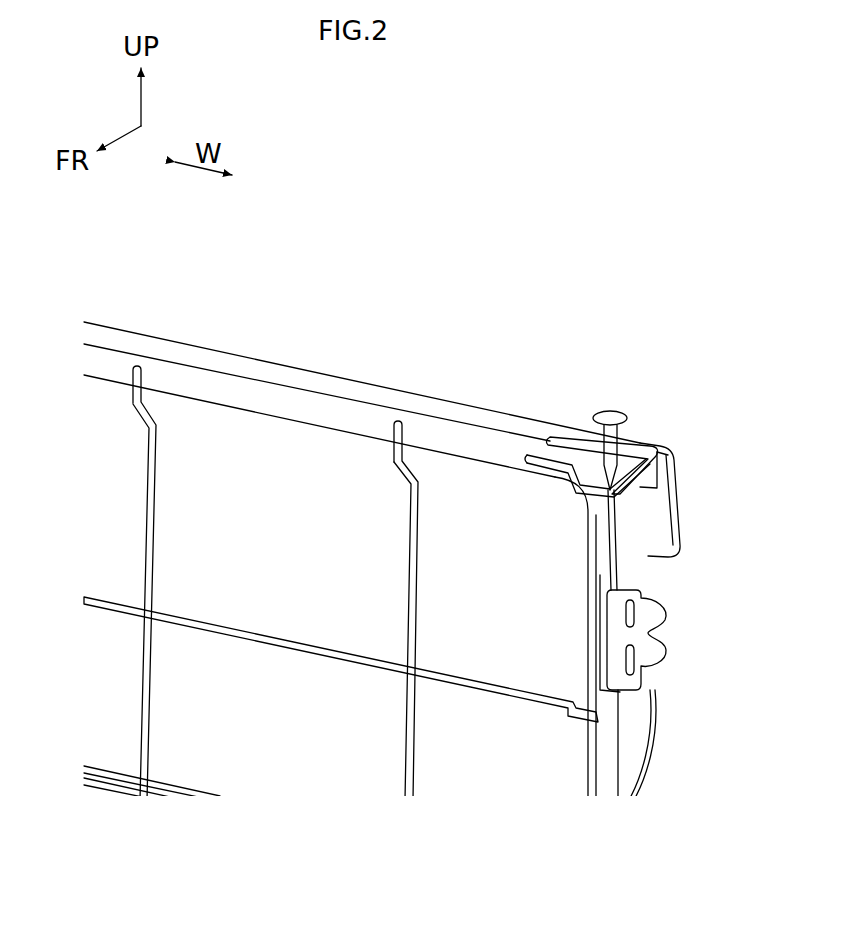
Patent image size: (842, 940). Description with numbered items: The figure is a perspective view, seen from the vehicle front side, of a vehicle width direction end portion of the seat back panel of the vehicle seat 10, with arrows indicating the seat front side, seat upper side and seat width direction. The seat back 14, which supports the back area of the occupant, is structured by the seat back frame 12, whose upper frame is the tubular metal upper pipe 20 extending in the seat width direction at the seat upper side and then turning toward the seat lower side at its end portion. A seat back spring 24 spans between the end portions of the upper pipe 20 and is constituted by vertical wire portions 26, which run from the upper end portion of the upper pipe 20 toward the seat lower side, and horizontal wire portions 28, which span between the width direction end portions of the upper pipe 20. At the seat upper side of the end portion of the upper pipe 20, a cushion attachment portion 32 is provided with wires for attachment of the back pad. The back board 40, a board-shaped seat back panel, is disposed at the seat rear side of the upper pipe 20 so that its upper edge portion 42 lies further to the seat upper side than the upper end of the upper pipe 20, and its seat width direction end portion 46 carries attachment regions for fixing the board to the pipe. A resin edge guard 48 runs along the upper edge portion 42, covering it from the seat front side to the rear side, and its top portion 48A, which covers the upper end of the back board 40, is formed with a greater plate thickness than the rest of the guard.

The vehicle seat 10 is at (519, 256).
The seat back frame 12 is at (431, 357).
The seat back 14 is at (586, 638).
The upper pipe 20 is at (273, 395).
The seat back spring 24 is at (168, 505).
The vertical wire portions 26 is at (157, 540).
The horizontal wire portions 28 is at (287, 642).
The cushion attachment portions 32 is at (642, 676).
The back board 40 is at (686, 516).
The upper edge portion 42 is at (668, 470).
The seat width direction two end portions 46 is at (638, 742).
The edge guard 48 is at (546, 430).
The top portion 48A is at (496, 425).